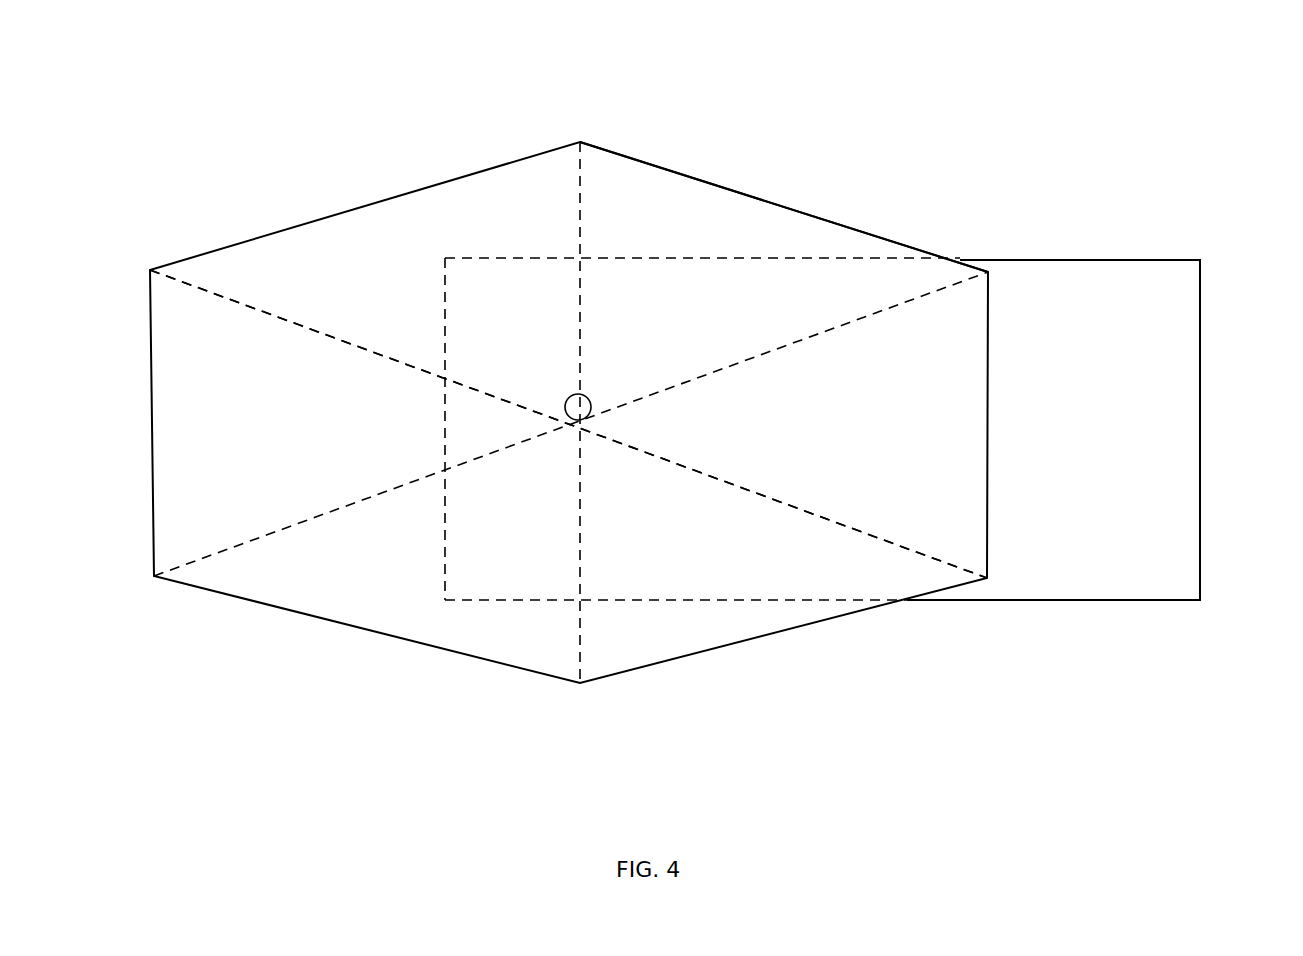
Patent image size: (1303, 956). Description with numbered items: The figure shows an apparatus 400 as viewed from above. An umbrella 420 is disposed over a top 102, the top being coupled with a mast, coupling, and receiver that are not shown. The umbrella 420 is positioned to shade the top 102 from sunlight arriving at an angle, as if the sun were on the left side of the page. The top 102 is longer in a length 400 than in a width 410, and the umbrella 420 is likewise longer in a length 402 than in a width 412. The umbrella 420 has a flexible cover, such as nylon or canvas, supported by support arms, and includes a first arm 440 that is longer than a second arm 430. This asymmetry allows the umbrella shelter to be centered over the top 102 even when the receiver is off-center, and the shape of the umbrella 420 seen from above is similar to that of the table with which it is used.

The apparatus 400 is at (677, 70).
The umbrella 420 is at (690, 178).
The second arm 430 is at (577, 230).
The first arm 440 is at (265, 310).
The top 102 is at (1053, 430).
The width 412 is at (124, 327).
The width 410 is at (1226, 343).
The length 402 is at (673, 710).